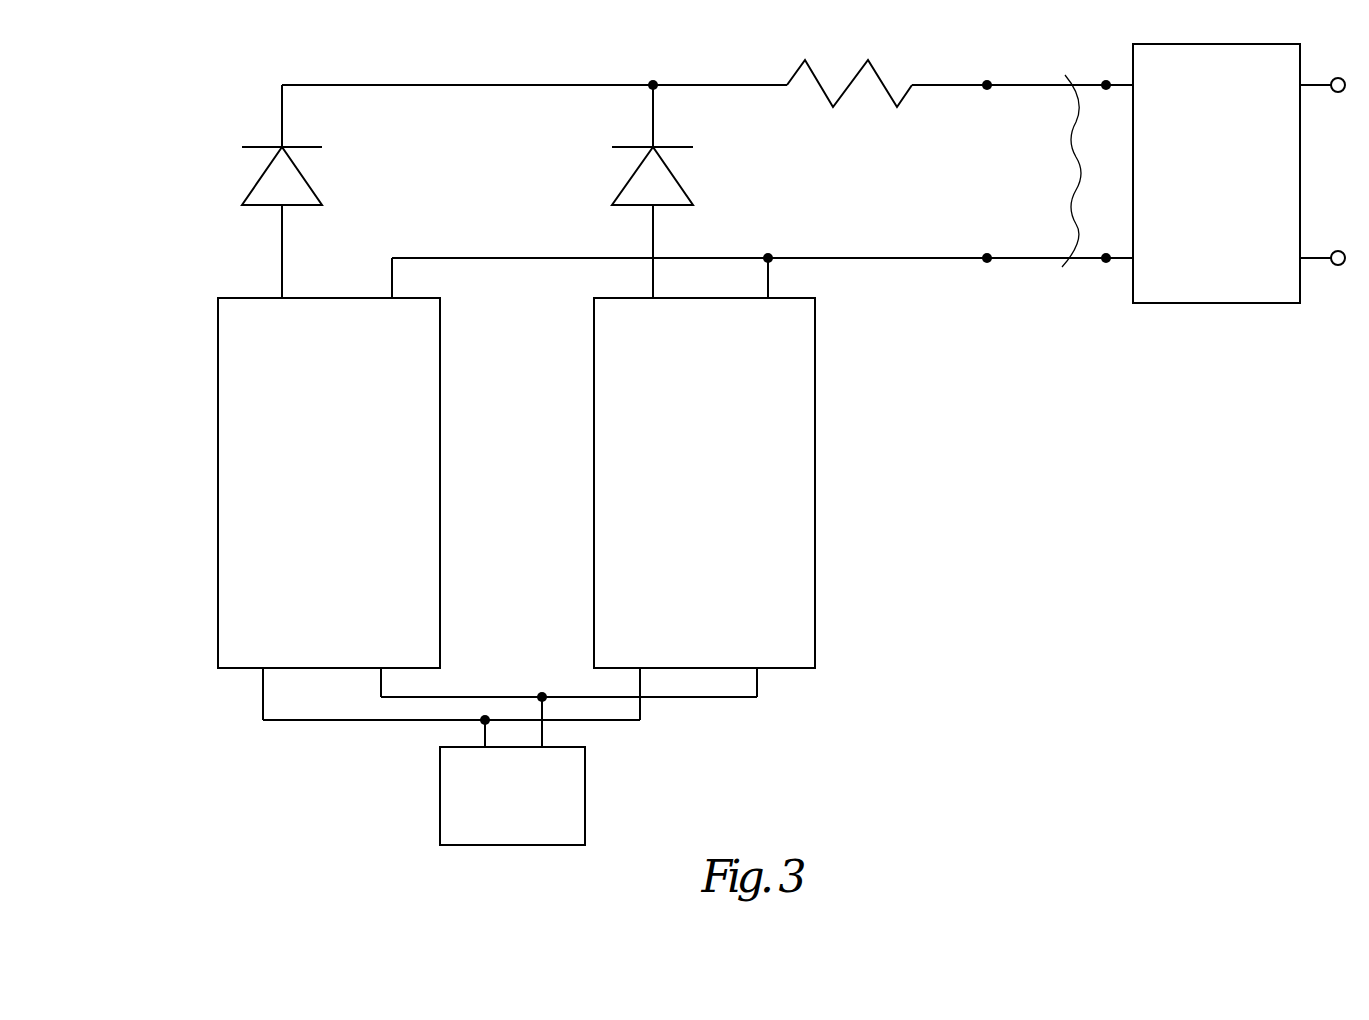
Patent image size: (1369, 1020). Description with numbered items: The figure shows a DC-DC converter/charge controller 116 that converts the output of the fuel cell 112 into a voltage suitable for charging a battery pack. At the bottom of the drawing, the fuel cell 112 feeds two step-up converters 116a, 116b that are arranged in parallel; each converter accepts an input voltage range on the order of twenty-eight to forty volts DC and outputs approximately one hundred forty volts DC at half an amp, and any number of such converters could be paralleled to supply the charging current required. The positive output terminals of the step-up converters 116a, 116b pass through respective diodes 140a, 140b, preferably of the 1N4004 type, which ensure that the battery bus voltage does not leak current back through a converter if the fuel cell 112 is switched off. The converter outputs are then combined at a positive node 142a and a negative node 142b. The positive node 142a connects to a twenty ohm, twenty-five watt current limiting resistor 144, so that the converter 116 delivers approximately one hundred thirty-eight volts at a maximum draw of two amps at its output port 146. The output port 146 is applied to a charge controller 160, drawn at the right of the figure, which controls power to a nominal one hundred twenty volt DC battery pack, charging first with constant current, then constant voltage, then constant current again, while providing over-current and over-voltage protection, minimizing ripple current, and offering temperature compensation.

The fuel cell 112 is at (585, 805).
The DC-DC converter/charge controller 116 is at (193, 292).
The step-up converter 116a is at (440, 480).
The step-up converter 116b is at (815, 490).
The diode 140a is at (307, 185).
The diode 140b is at (682, 191).
The positive node 142a is at (653, 85).
The negative node 142b is at (768, 258).
The current limiting resistor 144 is at (876, 72).
The output port 146 is at (1083, 177).
The charge controller 160 is at (1187, 304).